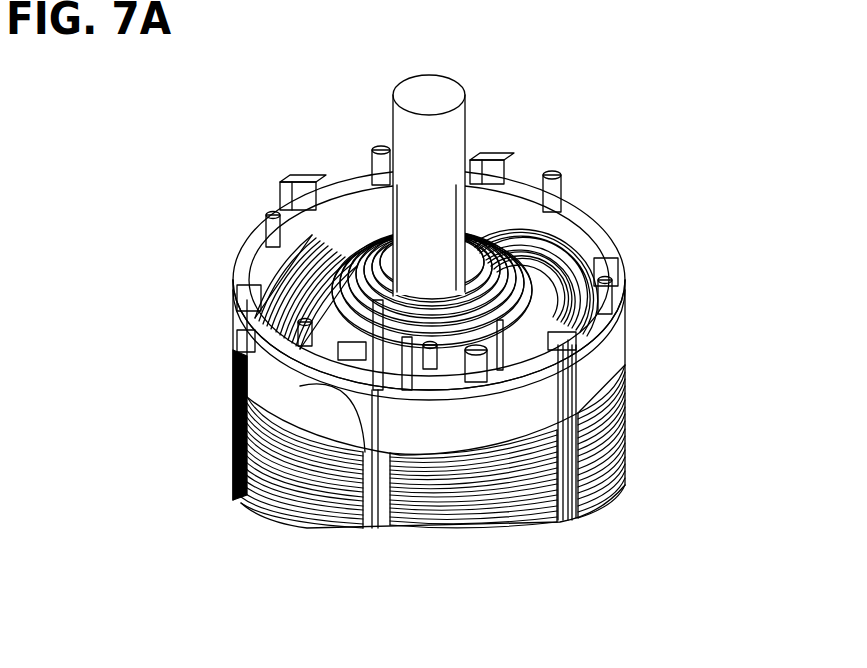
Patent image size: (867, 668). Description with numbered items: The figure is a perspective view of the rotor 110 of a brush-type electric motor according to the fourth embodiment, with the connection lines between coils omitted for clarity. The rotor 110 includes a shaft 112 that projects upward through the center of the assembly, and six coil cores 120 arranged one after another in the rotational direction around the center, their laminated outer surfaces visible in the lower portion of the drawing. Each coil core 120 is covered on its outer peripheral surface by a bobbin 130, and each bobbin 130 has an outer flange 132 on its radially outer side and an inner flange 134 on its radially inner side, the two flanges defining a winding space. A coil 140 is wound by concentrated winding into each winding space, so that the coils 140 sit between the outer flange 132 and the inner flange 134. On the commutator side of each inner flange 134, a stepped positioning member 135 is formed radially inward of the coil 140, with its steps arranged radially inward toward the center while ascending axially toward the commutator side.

The rotor 110 is at (622, 200).
The shaft 112 is at (437, 92).
The coil core 120 is at (278, 498).
The bobbin 130 is at (362, 178).
The outer flange 132 is at (325, 185).
The inner flange 134 is at (300, 210).
The stepped positioning member 135 is at (332, 208).
The coil 140 is at (505, 222).